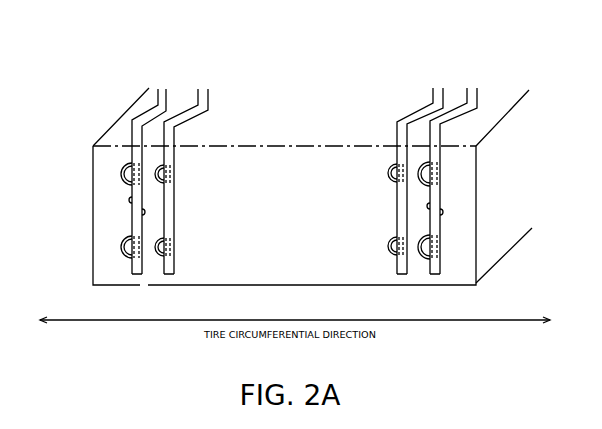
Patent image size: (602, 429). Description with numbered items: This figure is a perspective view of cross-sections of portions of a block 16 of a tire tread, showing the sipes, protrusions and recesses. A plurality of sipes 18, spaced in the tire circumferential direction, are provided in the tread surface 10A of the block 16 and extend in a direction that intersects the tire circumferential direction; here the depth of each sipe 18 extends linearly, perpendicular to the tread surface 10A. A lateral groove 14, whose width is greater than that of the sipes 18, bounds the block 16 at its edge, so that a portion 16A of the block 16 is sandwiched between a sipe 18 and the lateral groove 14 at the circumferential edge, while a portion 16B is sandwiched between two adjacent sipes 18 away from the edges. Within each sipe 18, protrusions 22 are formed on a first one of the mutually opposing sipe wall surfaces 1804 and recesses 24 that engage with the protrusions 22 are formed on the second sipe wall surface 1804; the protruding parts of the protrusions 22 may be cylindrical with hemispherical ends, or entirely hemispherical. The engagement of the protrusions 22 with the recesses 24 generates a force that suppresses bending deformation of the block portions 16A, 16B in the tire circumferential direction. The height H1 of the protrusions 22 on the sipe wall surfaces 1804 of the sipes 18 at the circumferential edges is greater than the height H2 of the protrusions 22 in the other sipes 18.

The tread surface 10A is at (333, 93).
The lateral groove 14 is at (71, 221).
The block 16 is at (403, 97).
The portion of the block 16A is at (147, 90).
The portion of the block 16B is at (185, 99).
The sipe 18 is at (156, 95).
The protrusion 22 is at (127, 163).
The recess 24 is at (153, 164).
The sipe wall surface 1804 is at (131, 201).
The height of the protrusions H1 is at (158, 222).
The height of the protrusions H2 is at (148, 192).